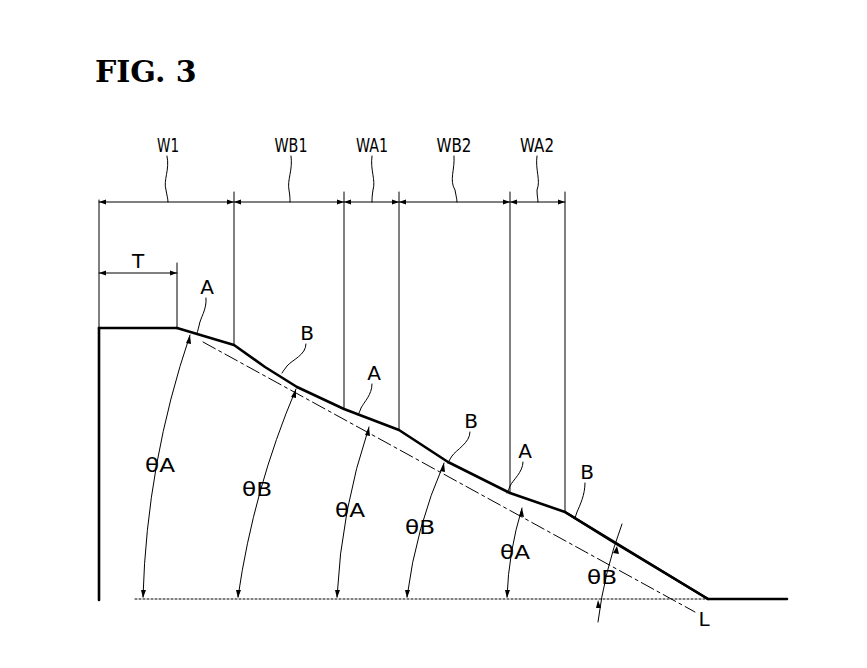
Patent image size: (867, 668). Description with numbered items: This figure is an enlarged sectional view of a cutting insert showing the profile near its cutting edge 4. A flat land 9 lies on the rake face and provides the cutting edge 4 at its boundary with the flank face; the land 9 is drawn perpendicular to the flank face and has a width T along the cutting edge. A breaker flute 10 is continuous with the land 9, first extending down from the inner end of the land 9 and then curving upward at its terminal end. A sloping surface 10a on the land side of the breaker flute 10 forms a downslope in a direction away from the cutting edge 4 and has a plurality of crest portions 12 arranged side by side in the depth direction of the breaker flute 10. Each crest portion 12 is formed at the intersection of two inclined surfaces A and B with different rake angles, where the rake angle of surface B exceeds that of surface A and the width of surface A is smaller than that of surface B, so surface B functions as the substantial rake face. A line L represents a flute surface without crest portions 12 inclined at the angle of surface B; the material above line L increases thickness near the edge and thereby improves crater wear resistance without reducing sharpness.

The cutting edge 4 is at (98, 324).
The flat land 9 is at (128, 327).
The breaker flute 10 is at (632, 364).
The sloping surface 10a is at (601, 537).
The crest portions 12 is at (234, 345).